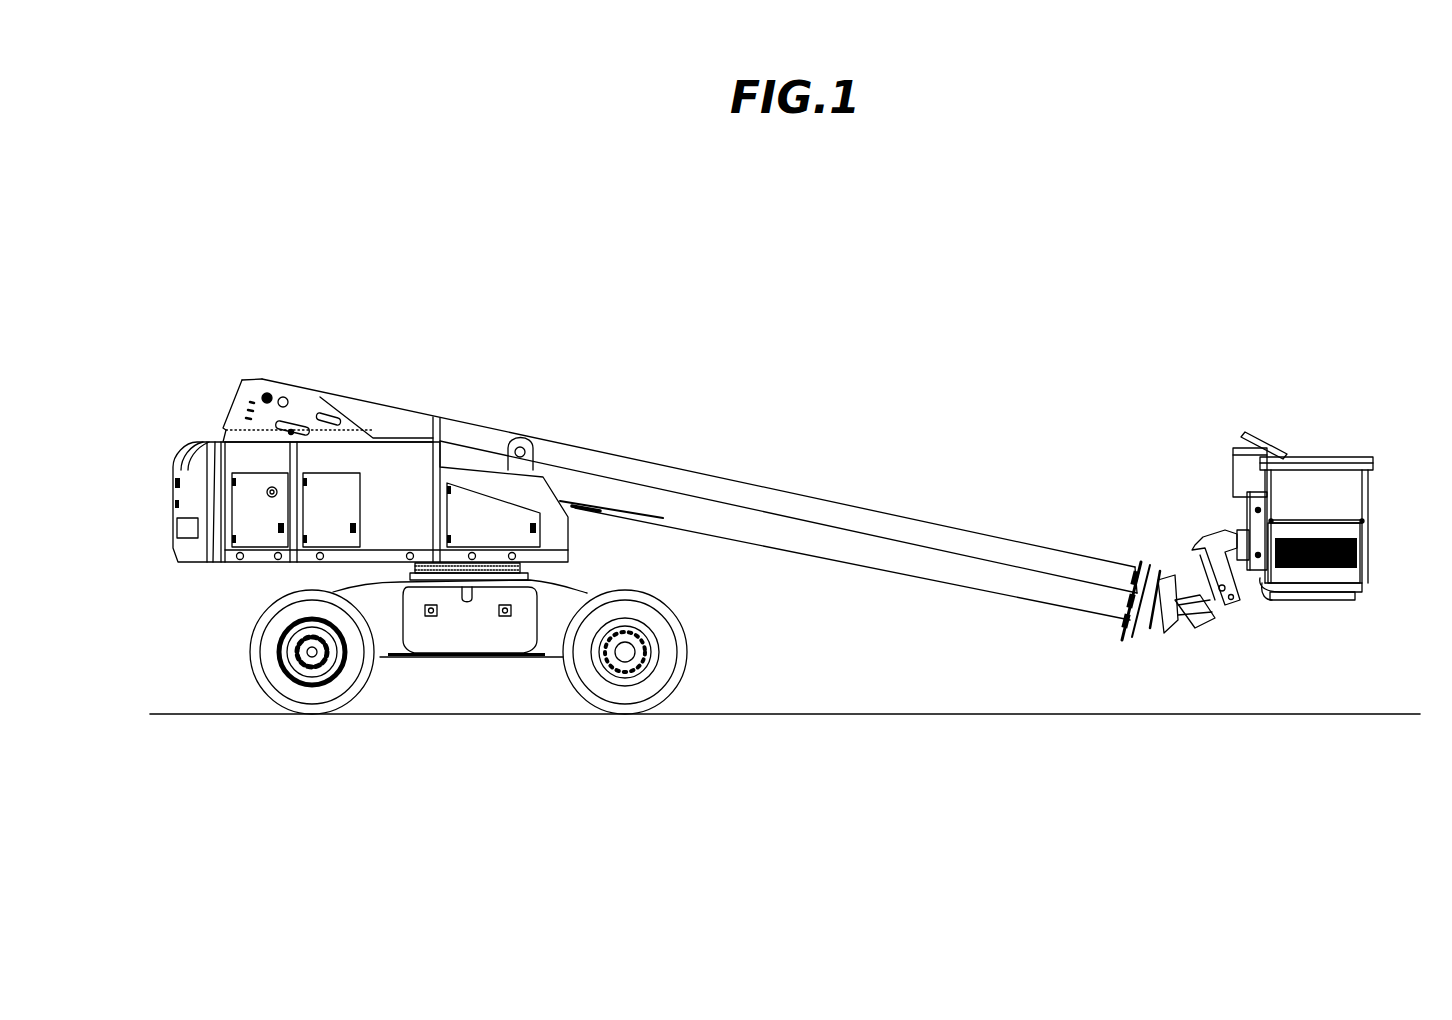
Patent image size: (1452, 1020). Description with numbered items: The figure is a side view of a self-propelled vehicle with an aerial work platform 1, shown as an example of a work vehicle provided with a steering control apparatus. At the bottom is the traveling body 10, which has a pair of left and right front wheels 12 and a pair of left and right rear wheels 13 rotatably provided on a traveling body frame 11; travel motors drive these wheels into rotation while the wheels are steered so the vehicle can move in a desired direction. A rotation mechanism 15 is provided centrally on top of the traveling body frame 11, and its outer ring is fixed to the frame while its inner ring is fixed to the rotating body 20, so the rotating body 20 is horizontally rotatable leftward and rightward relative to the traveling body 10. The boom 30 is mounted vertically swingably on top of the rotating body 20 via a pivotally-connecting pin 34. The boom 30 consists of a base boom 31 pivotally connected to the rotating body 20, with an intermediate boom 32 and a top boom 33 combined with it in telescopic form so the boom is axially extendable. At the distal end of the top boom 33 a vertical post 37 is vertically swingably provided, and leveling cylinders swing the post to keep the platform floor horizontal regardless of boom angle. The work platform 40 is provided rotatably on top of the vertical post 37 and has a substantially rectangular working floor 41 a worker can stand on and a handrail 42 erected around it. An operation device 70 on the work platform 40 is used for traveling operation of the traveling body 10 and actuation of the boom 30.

The self-propelled vehicle with an aerial work platform 1 is at (584, 266).
The traveling body 10 is at (228, 655).
The traveling body frame 11 is at (466, 660).
The front wheels 12 is at (313, 692).
The rear wheels 13 is at (626, 692).
The rotation mechanism 15 is at (532, 568).
The rotating body 20 is at (160, 503).
The boom 30 is at (650, 446).
The base boom 31 is at (935, 535).
The intermediate boom 32 is at (1142, 570).
The top boom 33 is at (1167, 607).
The pivotally-connecting pin 34 is at (267, 392).
The vertical post 37 is at (1200, 540).
The work platform 40 is at (1352, 450).
The working floor 41 is at (1340, 605).
The handrail 42 is at (1368, 491).
The operation device 70 is at (1240, 446).